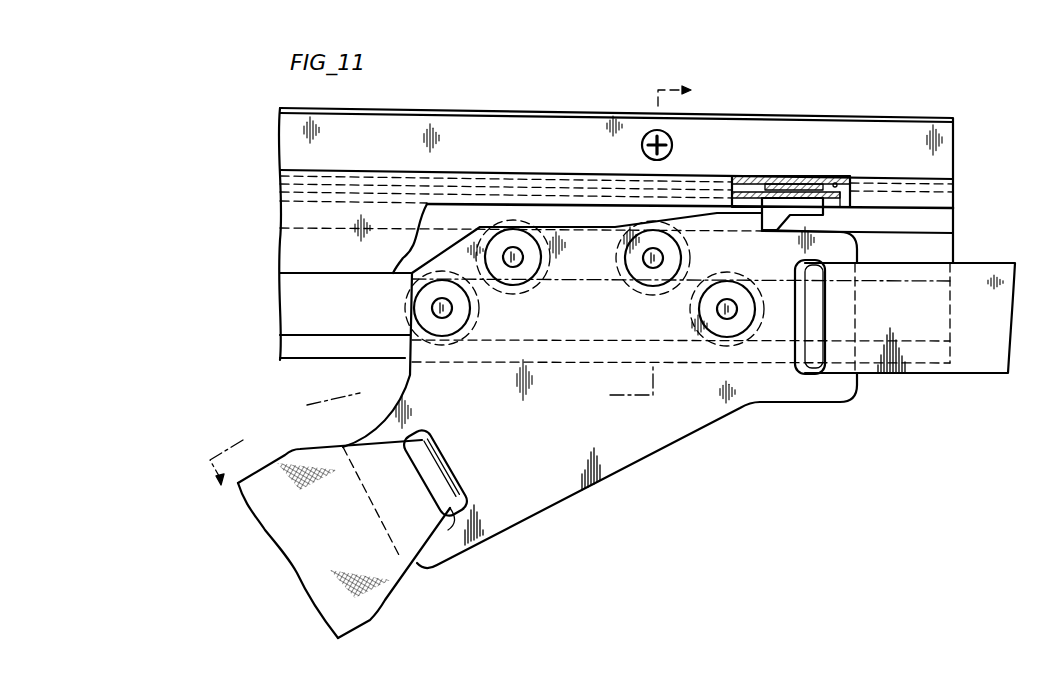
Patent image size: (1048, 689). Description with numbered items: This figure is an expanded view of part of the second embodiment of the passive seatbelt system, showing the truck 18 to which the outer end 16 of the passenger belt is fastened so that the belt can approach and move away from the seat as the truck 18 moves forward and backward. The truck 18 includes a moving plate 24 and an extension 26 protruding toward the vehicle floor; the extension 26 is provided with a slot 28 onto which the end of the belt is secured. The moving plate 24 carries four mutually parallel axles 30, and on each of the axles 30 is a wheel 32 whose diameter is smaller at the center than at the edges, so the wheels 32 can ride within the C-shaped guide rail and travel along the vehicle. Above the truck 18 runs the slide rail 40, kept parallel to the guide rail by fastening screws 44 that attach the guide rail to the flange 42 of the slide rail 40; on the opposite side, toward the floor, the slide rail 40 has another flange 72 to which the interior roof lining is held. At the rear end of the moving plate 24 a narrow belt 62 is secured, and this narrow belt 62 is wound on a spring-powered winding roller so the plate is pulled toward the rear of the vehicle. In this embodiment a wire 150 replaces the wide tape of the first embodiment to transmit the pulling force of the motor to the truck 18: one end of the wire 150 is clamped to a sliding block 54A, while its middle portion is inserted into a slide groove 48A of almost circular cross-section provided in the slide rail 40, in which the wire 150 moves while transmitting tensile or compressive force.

The outer end of the belt 16 is at (388, 580).
The truck 18 is at (716, 432).
The moving plate 24 is at (787, 395).
The extension 26 is at (538, 503).
The slot 28 is at (448, 473).
The axles 30 is at (452, 305).
The wheels 32 is at (513, 295).
The slide rail 40 is at (512, 172).
The flange 42 is at (563, 117).
The fastening screws 44 is at (672, 150).
The slide groove 48A is at (835, 183).
The sliding block 54A is at (812, 213).
The narrow belt 62 is at (903, 374).
The flange 72 is at (333, 267).
The wire 150 is at (757, 177).